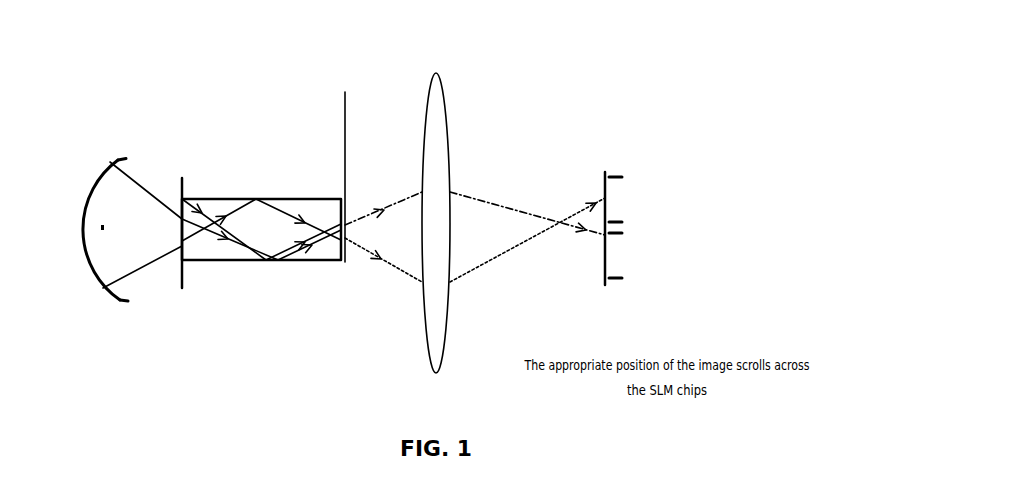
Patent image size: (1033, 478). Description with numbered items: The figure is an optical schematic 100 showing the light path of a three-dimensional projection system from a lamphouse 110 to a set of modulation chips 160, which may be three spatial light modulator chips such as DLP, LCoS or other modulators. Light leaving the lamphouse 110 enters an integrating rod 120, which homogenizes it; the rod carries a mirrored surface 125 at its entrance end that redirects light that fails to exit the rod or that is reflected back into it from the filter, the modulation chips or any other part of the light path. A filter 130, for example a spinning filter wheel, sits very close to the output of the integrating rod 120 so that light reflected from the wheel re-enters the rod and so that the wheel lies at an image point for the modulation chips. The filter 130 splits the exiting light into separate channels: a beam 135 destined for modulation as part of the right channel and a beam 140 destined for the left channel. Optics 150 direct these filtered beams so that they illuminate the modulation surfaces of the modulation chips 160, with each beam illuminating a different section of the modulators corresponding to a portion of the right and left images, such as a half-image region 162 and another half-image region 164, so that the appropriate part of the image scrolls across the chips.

The optical schematic 100 is at (361, 389).
The lamphouse 110 is at (88, 145).
The mirrored surface 125 is at (183, 172).
The integrating rod 120 is at (240, 175).
The filter 130 is at (347, 109).
The beam 135 is at (475, 197).
The beam 140 is at (475, 252).
The optics 150 is at (450, 232).
The modulation chips 160 is at (610, 142).
The half of left image (upper) 162 is at (617, 188).
The half of left image (lower) 164 is at (627, 263).